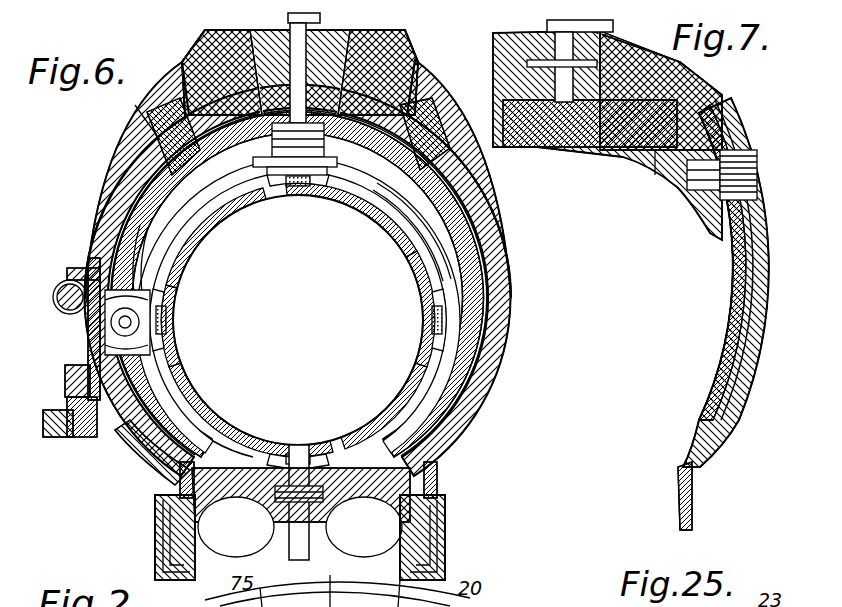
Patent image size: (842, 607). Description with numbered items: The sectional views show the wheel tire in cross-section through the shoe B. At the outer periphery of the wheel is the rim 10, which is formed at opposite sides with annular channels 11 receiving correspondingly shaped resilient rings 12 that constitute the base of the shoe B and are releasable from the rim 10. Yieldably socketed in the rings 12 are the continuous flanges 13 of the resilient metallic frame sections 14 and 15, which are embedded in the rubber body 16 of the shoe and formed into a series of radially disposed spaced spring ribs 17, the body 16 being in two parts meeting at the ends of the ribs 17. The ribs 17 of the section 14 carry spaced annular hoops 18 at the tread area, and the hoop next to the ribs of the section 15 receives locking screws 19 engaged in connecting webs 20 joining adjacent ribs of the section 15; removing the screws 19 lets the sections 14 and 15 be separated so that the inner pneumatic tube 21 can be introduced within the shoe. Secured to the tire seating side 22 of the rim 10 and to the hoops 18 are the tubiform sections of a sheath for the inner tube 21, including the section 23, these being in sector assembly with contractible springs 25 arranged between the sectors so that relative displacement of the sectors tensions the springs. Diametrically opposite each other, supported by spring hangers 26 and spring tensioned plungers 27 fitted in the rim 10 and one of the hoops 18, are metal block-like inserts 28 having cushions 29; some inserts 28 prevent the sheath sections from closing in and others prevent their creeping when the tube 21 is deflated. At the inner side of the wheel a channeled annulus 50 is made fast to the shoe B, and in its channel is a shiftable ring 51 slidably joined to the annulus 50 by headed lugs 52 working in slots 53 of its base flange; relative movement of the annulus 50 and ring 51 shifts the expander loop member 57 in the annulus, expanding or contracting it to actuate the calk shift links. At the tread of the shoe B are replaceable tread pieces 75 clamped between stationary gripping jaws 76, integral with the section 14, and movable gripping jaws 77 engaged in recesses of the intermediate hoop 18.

In FIG. 6, the rim 10 is at (378, 522).
In FIG. 6, the annular channels 11 is at (160, 556).
In FIG. 6, the resilient rings 12 is at (156, 538).
In FIG. 6, the continuous flanges 13 is at (182, 492).
In FIG. 7, the continuous flanges 13 is at (692, 492).
In FIG. 6, the frame section 14 is at (152, 468).
In FIG. 6, the frame section 15 is at (480, 420).
In FIG. 7, the frame section 15 is at (730, 395).
In FIG. 6, the rubber body 16 is at (484, 332).
In FIG. 7, the rubber body 16 is at (735, 330).
In FIG. 6, the spring ribs 17 is at (505, 243).
In FIG. 7, the spring ribs 17 is at (505, 237).
In FIG. 6, the annular hoops 18 is at (440, 112).
In FIG. 7, the annular hoops 18 is at (705, 112).
In FIG. 7, the locking screws 19 is at (745, 168).
In FIG. 7, the connecting webs 20 is at (720, 160).
In FIG. 6, the inner pneumatic tube 21 is at (185, 385).
In FIG. 6, the tire seating side 22 is at (225, 452).
In FIG. 6, the tubiform section 23 is at (215, 222).
In FIG. 6, the contractible springs 25 is at (122, 320).
In FIG. 6, the spring hangers 26 is at (415, 225).
In FIG. 6, the spring tensioned plungers 27 is at (248, 150).
In FIG. 6, the block-like inserts 28 is at (338, 208).
In FIG. 6, the cushions 29 is at (298, 196).
In FIG. 6, the channeled annulus 50 is at (92, 346).
In FIG. 6, the shiftable ring 51 is at (68, 378).
In FIG. 6, the headed lugs 52 is at (82, 440).
In FIG. 6, the slots 53 is at (55, 438).
In FIG. 6, the expander loop member 57 is at (66, 290).
In FIG. 6, the replaceable tread pieces 75 is at (300, 14).
In FIG. 7, the replaceable tread pieces 75 is at (585, 22).
In FIG. 6, the stationary gripping jaws 76 is at (195, 50).
In FIG. 7, the stationary gripping jaws 76 is at (662, 170).
In FIG. 6, the movable gripping jaws 77 is at (232, 32).
In FIG. 7, the movable gripping jaws 77 is at (613, 158).
In FIG. 6, the shoe B is at (136, 108).
In FIG. 7, the shoe B is at (655, 175).